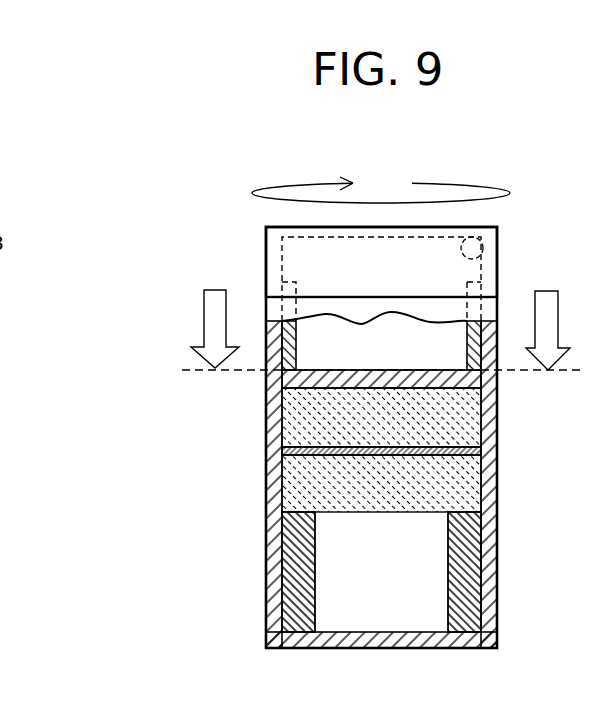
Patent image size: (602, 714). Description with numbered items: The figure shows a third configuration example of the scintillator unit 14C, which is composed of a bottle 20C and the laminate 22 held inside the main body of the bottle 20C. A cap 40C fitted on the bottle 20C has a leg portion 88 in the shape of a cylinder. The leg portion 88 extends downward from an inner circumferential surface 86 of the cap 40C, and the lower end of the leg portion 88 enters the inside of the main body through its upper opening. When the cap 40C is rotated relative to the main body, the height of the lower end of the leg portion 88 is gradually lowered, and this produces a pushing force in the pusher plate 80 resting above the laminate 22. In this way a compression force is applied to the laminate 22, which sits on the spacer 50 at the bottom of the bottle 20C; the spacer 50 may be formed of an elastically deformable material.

The scintillator unit 14C is at (384, 224).
The bottle 20C is at (242, 252).
The cap 40C is at (497, 248).
The inner circumferential surface 86 is at (498, 228).
The leg portion 88 is at (318, 320).
The pusher plate 80 is at (490, 349).
The laminate 22 is at (497, 413).
The spacer 50 is at (497, 562).